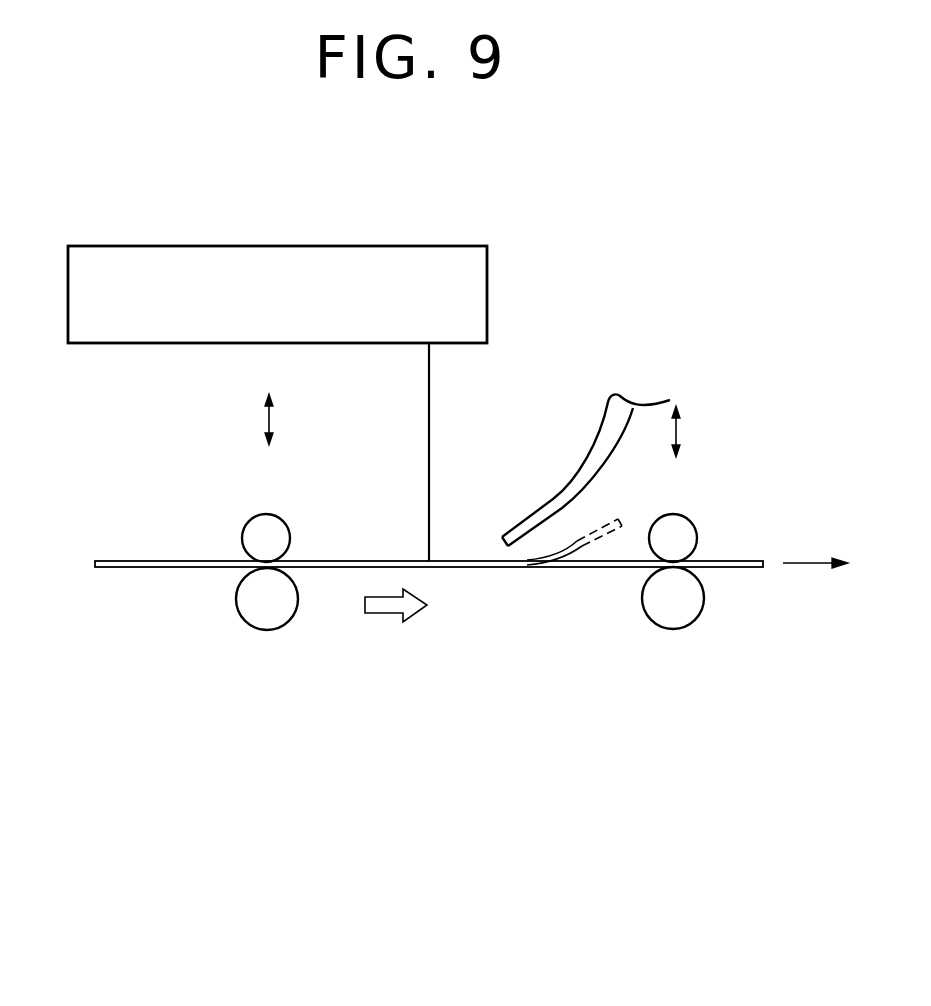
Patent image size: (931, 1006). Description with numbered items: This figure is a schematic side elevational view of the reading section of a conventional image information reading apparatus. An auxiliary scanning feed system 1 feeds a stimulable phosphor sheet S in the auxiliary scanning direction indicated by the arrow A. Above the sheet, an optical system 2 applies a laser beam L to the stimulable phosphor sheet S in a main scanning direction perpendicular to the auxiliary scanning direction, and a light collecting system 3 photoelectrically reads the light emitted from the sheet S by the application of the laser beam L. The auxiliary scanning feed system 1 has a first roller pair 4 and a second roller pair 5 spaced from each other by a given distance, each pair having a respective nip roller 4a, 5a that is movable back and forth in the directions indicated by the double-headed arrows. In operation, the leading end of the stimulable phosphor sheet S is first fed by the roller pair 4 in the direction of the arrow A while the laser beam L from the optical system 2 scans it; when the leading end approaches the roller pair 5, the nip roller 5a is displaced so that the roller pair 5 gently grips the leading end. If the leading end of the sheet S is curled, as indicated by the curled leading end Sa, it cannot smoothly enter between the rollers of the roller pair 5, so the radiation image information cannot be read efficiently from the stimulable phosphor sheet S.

The auxiliary scanning feed system 1 is at (425, 670).
The optical system 2 is at (207, 243).
The light collecting system 3 is at (603, 437).
The first roller pair 4 is at (238, 617).
The nip roller 4a is at (265, 524).
The second roller pair 5 is at (647, 628).
The nip roller 5a is at (671, 537).
The stimulable phosphor sheet S is at (144, 561).
The curled leading end Sa is at (574, 546).
The laser beam L is at (429, 423).
The auxiliary scanning direction A is at (415, 607).